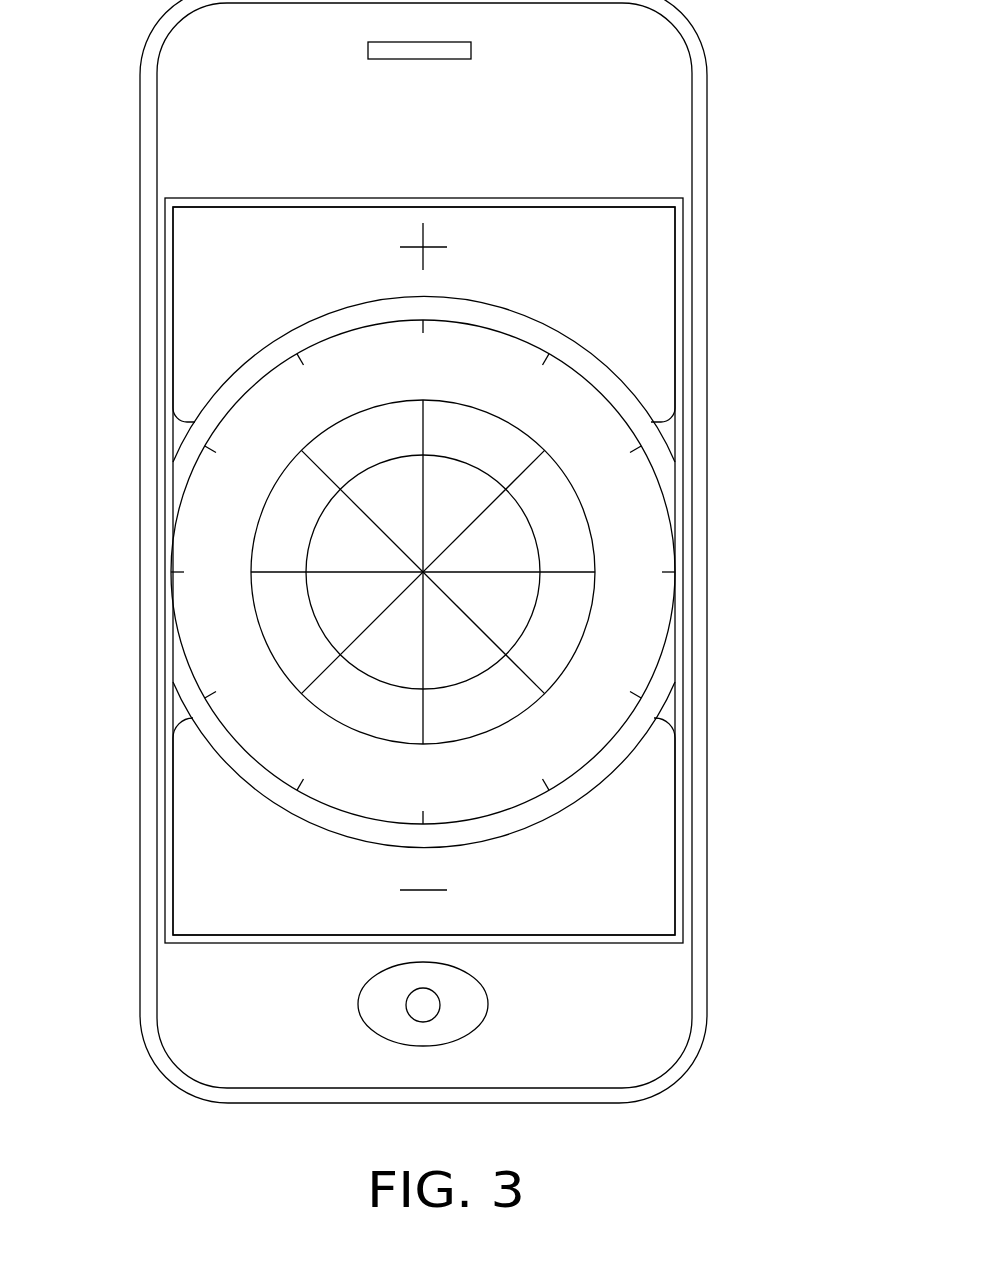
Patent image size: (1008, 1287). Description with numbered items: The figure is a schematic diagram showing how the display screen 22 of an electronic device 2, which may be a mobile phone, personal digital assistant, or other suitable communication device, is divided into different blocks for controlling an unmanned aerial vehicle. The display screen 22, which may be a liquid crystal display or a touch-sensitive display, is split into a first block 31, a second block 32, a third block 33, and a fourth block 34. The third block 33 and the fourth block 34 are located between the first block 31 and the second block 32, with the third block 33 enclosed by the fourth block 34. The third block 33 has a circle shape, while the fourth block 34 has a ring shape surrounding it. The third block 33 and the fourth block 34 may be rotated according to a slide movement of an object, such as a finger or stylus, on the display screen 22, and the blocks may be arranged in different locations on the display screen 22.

The electronic device 2 is at (642, 97).
The display screen 22 is at (272, 197).
The first block 31 is at (629, 297).
The second block 32 is at (622, 835).
The third block 33 is at (555, 530).
The fourth block 34 is at (632, 627).